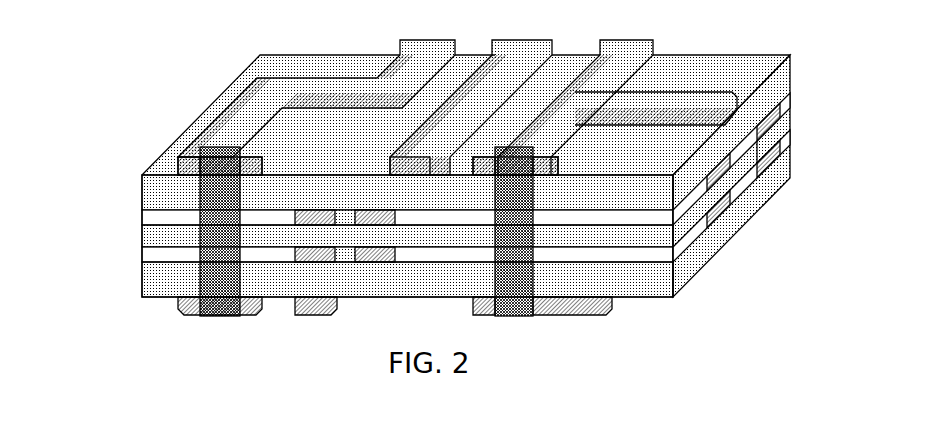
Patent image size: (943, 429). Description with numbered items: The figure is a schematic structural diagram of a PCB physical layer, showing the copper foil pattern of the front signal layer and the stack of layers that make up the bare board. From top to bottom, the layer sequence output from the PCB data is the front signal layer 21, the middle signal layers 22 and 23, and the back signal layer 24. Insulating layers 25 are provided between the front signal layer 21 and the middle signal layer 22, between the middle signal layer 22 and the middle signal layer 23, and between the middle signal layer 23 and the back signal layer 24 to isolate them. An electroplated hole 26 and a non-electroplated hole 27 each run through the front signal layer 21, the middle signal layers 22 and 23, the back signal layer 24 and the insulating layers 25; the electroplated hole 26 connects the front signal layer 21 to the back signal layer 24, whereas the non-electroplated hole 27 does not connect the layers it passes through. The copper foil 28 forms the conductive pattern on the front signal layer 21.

The front signal layer 21 is at (128, 165).
The middle signal layer 22 is at (128, 218).
The middle signal layer 23 is at (128, 253).
The back signal layer 24 is at (128, 304).
The insulating layers 25 is at (737, 135).
The electroplated hole 26 is at (213, 162).
The non-electroplated hole 27 is at (628, 233).
The copper foil 28 is at (256, 120).